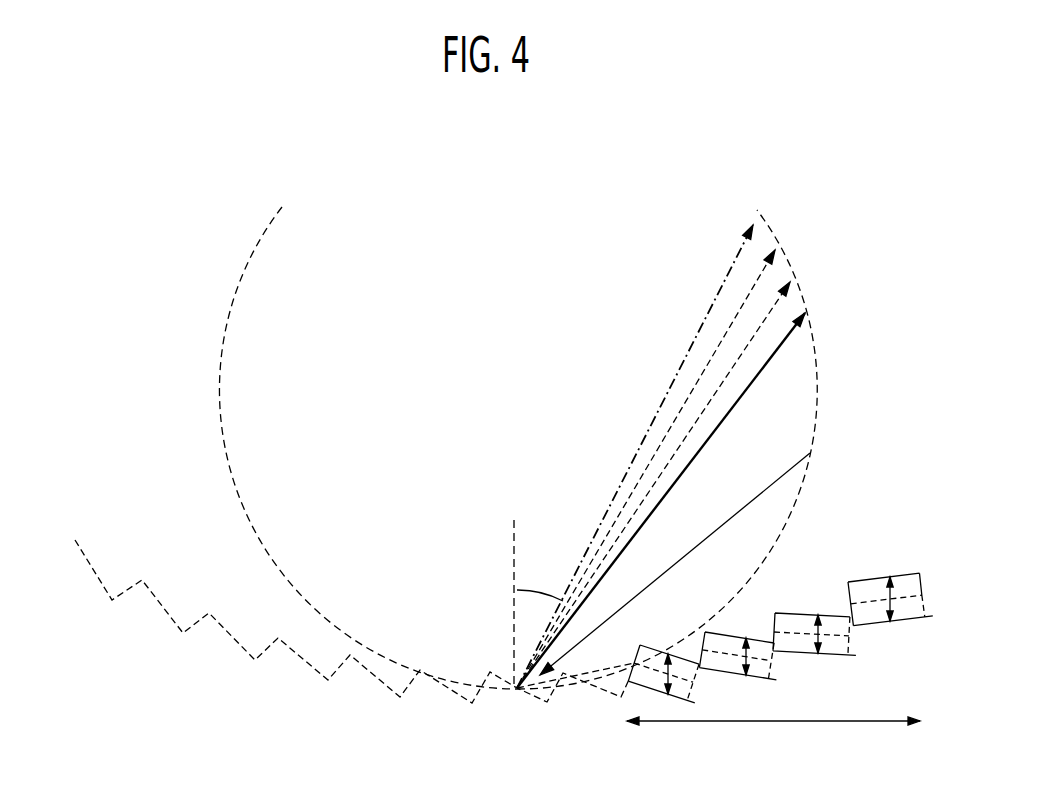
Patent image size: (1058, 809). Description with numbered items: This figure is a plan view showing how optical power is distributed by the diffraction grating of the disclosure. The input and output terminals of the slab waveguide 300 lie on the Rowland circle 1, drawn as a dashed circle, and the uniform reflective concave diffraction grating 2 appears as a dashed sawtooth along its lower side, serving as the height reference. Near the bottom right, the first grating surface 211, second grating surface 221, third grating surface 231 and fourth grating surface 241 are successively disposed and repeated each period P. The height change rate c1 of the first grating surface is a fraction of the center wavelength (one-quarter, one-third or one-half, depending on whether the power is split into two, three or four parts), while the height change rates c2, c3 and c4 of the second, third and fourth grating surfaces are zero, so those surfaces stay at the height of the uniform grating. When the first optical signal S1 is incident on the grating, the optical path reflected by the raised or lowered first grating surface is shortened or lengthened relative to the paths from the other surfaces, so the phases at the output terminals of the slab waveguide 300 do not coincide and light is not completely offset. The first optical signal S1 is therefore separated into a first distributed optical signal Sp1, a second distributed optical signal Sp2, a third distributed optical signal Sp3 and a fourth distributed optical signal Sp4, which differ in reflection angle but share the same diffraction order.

The Rowland circle 1 is at (222, 353).
The uniform reflective concave diffraction grating 2 is at (93, 568).
The slab waveguide 300 is at (325, 312).
The first grating surface 211 is at (890, 571).
The second grating surface 221 is at (814, 599).
The third grating surface 231 is at (734, 628).
The fourth grating surface 241 is at (663, 649).
The height change rate of the first grating surface c1 is at (903, 598).
The height change rate of the second grating surface c2 is at (807, 630).
The height change rate of the third grating surface c3 is at (733, 653).
The height change rate of the fourth grating surface c4 is at (678, 674).
The period P is at (773, 735).
The first optical signal S1 is at (787, 473).
The first distributed optical signal Sp1 is at (767, 363).
The second distributed optical signal Sp2 is at (768, 310).
The third distributed optical signal Sp3 is at (765, 268).
The fourth distributed optical signal Sp4 is at (747, 238).